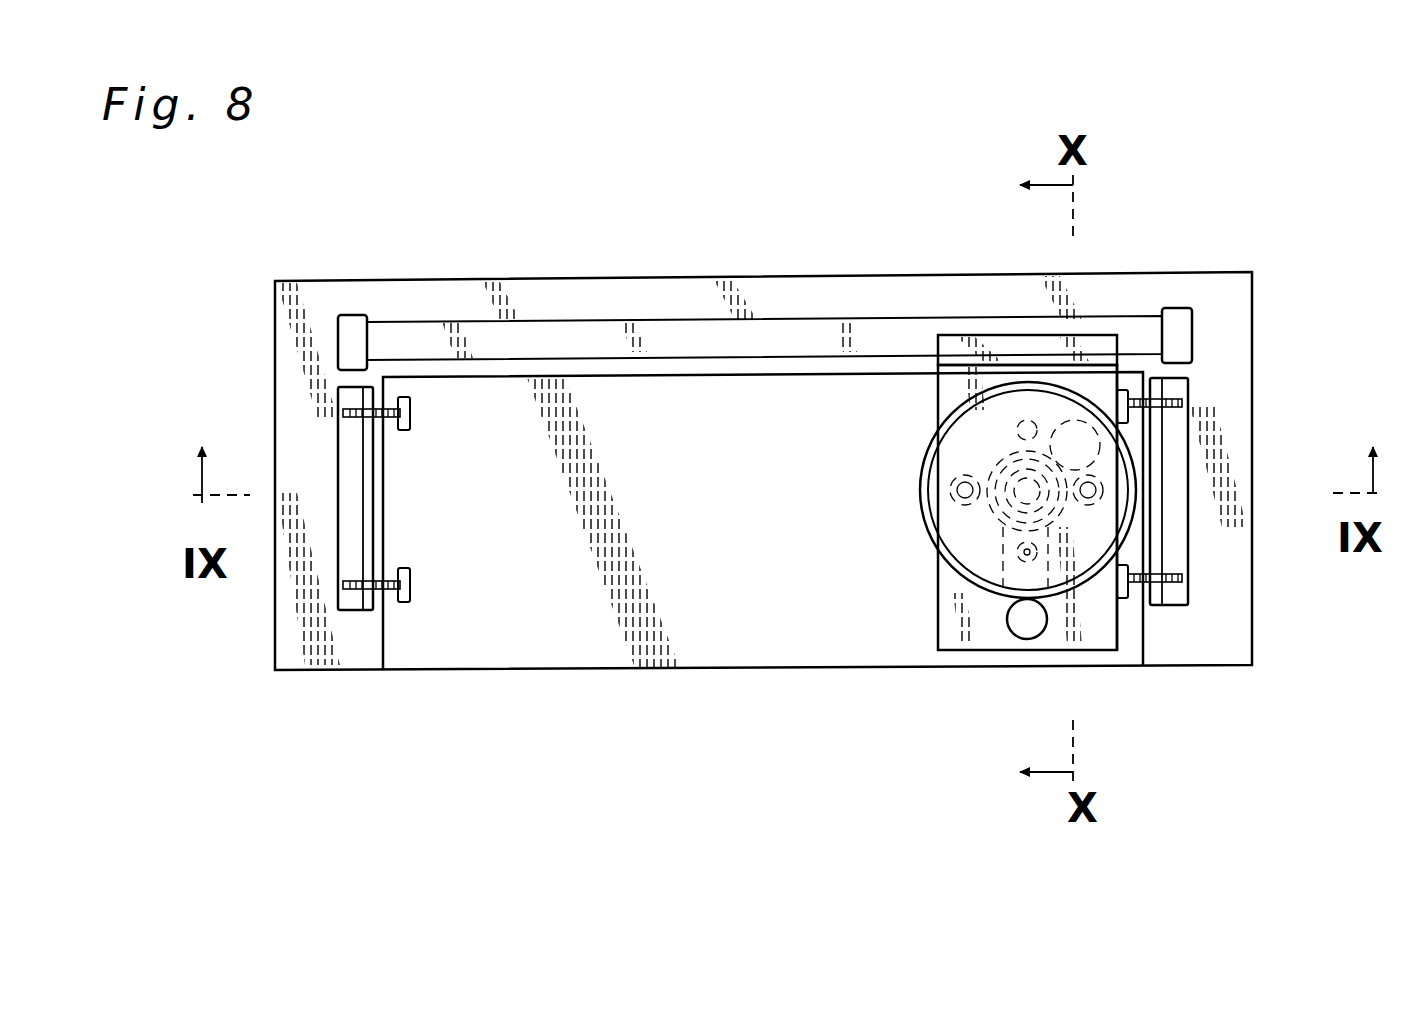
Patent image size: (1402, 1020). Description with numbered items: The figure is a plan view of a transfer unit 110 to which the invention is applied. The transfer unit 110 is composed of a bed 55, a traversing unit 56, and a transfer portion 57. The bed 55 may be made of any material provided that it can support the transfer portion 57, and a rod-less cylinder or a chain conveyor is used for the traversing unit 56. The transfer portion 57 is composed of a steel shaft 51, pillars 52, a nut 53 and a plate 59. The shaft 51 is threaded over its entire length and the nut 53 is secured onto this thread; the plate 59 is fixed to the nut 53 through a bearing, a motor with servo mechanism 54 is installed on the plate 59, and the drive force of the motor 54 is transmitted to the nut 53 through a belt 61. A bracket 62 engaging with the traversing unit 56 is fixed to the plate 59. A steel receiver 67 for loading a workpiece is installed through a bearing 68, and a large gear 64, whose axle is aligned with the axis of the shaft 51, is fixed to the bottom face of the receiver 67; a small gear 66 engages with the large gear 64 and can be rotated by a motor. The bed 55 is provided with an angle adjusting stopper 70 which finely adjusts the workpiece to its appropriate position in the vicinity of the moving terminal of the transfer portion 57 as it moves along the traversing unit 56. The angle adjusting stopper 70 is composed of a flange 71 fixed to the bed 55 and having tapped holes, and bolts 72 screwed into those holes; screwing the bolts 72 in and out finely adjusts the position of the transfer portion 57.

The transfer unit 110 is at (1207, 238).
The bed 55 is at (658, 290).
The traversing unit 56 is at (810, 332).
The bracket 62 is at (967, 340).
The bearing 68 is at (1033, 415).
The flange 71 is at (348, 440).
The bolts 72 is at (410, 413).
The pillars 52 is at (950, 468).
The steel receiver 67 is at (915, 490).
The nut 53 is at (990, 512).
The plate 59 is at (952, 608).
The transfer portion 57 is at (1073, 458).
The motor with servo mechanism 54 is at (1025, 628).
The belt 61 is at (1047, 605).
The small gear 66 is at (1093, 453).
The large gear 64 is at (1060, 515).
The steel shaft 51 is at (1107, 530).
The angle adjusting stopper 70 is at (350, 569).